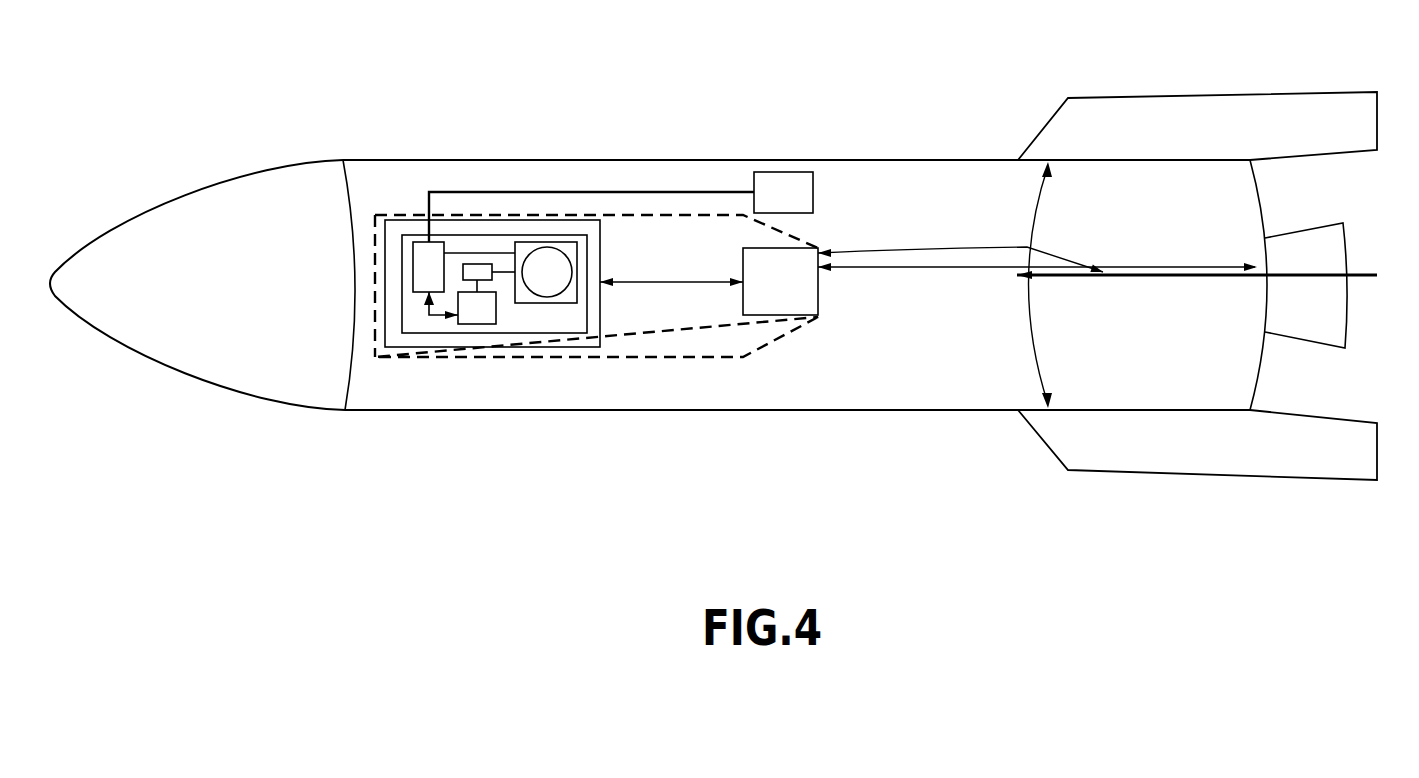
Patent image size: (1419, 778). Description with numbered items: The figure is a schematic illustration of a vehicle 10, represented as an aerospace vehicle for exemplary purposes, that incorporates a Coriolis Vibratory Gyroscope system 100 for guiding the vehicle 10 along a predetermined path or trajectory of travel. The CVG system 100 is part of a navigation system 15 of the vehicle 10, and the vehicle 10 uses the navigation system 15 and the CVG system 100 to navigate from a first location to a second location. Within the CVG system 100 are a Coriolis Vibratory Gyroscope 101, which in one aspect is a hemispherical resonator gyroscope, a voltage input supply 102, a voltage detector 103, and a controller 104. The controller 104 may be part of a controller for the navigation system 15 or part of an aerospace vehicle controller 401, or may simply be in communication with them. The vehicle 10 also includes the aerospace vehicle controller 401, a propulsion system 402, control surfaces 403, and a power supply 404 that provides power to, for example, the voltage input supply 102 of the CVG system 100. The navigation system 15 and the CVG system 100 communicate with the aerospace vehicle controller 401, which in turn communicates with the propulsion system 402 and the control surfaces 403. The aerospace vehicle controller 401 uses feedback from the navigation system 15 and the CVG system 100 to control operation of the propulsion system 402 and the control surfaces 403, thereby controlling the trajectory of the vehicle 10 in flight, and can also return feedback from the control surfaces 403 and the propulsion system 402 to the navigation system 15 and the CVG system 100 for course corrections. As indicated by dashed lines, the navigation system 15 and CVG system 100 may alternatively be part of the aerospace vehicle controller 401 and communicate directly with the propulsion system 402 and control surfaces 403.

The vehicle 10 is at (314, 530).
The navigation system 15 is at (567, 347).
The Coriolis Vibratory Gyroscope system 100 is at (432, 332).
The Coriolis Vibratory Gyroscope 101 is at (547, 258).
The voltage input supply 102 is at (423, 250).
The voltage detector 103 is at (477, 270).
The controller 104 is at (480, 318).
The aerospace vehicle controller 401 is at (783, 297).
The propulsion system 402 is at (1313, 328).
The control surfaces 403 is at (1337, 98).
The power supply 404 is at (775, 185).